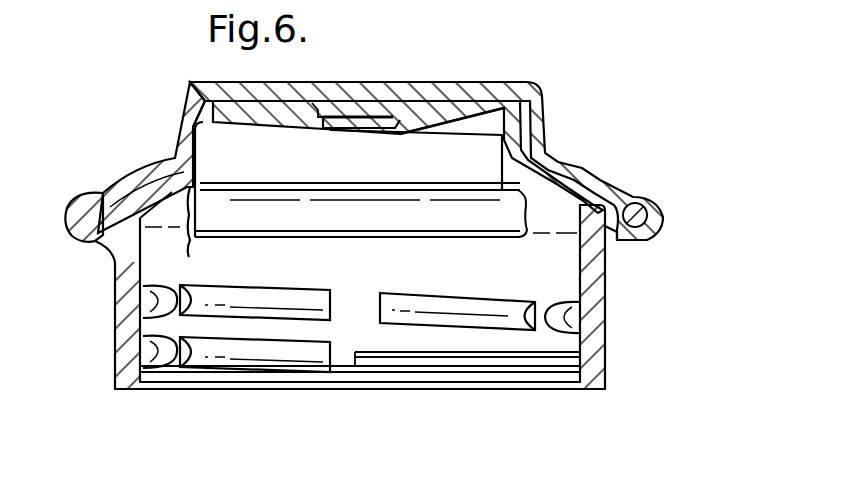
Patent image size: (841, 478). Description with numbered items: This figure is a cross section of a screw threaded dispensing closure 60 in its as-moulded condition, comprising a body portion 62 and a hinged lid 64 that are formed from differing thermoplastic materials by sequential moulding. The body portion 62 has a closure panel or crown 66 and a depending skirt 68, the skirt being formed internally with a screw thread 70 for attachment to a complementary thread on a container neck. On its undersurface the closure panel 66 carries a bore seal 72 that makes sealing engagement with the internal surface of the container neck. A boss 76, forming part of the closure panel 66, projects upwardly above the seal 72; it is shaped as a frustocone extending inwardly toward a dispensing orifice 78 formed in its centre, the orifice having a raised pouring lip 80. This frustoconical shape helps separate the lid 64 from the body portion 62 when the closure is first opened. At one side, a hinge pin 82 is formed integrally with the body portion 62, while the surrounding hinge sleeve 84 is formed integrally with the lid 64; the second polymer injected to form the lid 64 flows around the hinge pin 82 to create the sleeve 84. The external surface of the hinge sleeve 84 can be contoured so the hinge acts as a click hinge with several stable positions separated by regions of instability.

The screw threaded dispensing closure 60 is at (630, 138).
The body portion 62 is at (607, 338).
The hinged lid 64 is at (194, 93).
The closure panel 66 is at (207, 137).
The depending skirt 68 is at (125, 266).
The screw thread 70 is at (142, 300).
The bore seal 72 is at (188, 242).
The boss 76 is at (250, 122).
The dispensing orifice 78 is at (365, 120).
The raised pouring lip 80 is at (405, 110).
The hinge pin 82 is at (648, 209).
The hinge sleeve 84 is at (653, 232).